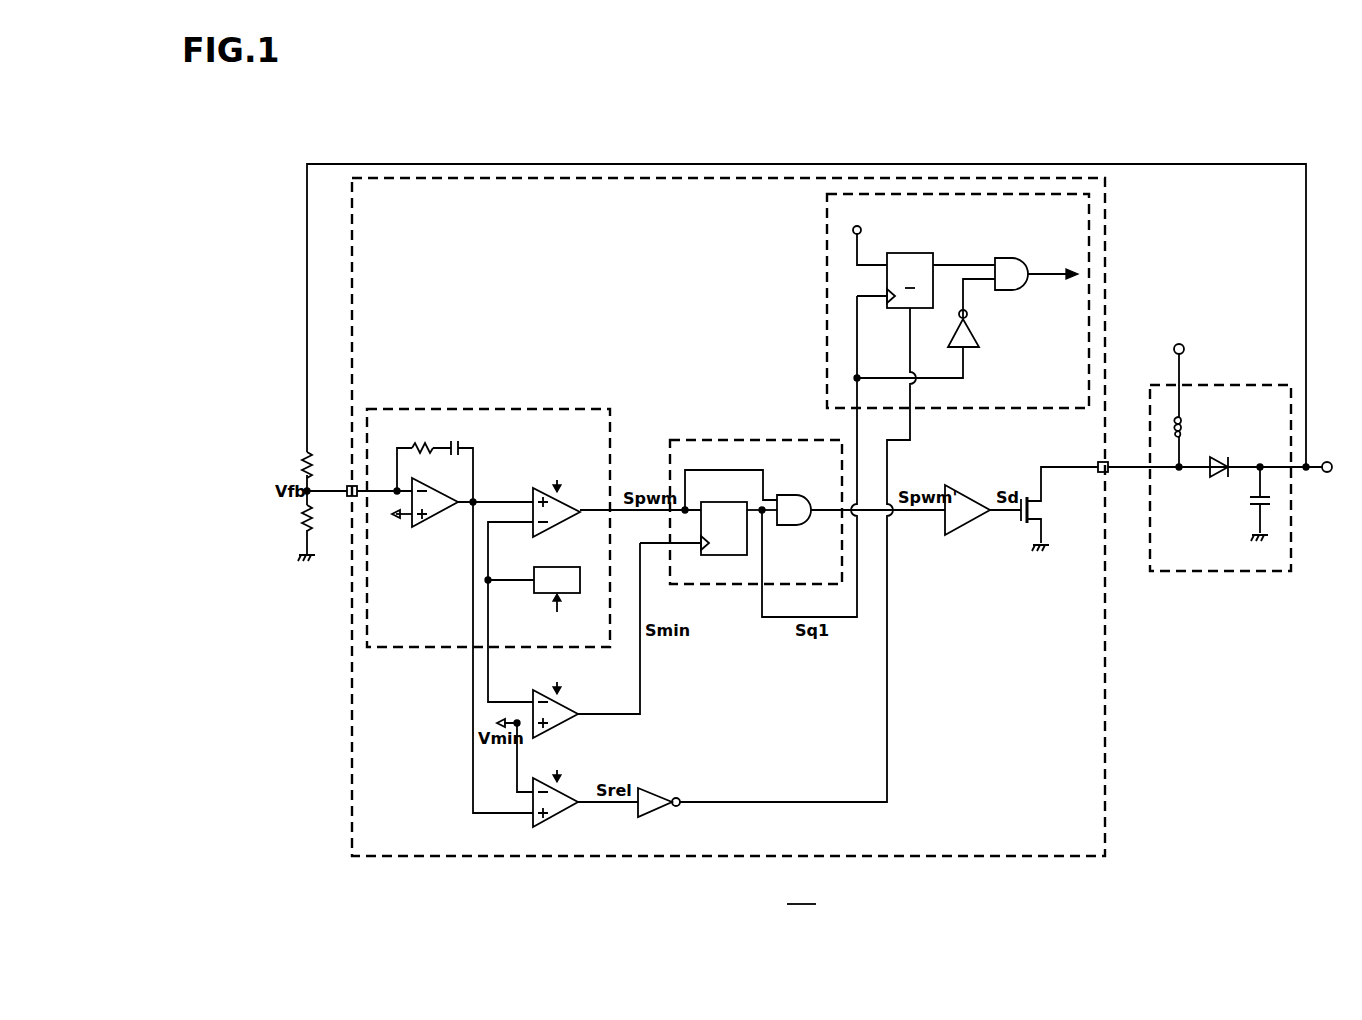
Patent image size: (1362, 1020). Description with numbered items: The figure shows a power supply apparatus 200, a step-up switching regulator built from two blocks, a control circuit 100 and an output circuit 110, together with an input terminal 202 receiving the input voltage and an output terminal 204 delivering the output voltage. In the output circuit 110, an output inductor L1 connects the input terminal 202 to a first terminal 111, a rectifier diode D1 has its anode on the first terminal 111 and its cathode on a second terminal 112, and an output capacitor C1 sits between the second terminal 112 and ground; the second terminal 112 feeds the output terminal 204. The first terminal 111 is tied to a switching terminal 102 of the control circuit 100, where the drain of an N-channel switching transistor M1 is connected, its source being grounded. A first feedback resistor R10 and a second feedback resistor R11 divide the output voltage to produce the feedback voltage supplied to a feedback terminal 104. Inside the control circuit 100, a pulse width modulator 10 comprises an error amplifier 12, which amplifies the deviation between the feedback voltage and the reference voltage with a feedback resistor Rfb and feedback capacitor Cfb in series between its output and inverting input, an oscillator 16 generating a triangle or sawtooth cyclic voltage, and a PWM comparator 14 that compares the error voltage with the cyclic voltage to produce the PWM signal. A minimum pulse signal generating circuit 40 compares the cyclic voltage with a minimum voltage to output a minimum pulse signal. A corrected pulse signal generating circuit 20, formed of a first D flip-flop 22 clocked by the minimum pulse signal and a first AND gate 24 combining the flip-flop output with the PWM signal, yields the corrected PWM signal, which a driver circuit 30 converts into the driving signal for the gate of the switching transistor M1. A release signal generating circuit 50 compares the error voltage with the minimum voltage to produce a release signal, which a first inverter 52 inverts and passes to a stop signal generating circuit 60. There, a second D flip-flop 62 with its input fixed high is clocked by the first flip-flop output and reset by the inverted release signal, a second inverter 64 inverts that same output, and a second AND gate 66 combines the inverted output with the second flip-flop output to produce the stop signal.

The pulse width modulator 10 is at (478, 409).
The error amplifier 12 is at (435, 521).
The PWM comparator 14 is at (553, 528).
The oscillator 16 is at (535, 593).
The corrected pulse signal generating circuit 20 is at (751, 440).
The first D flip-flop 22 is at (723, 556).
The first AND gate 24 is at (790, 494).
The driver circuit 30 is at (963, 492).
The minimum pulse signal generating circuit 40 is at (555, 735).
The release signal generating circuit 50 is at (555, 825).
The first inverter 52 is at (656, 789).
The stop signal generating circuit 60 is at (827, 298).
The second D flip-flop 62 is at (904, 253).
The second inverter 64 is at (975, 335).
The second AND gate 66 is at (1009, 258).
The control circuit 100 is at (1105, 712).
The switching terminal 102 is at (1106, 462).
The feedback terminal 104 is at (348, 486).
The switching regulator output circuit 110 is at (1218, 571).
The first terminal 111 is at (1140, 472).
The second terminal 112 is at (1296, 472).
The power supply apparatus 200 is at (804, 894).
The input terminal 202 is at (1184, 351).
The output terminal 204 is at (1328, 461).
The first feedback resistor R10 is at (302, 468).
The second feedback resistor R11 is at (302, 518).
The feedback resistor Rfb is at (425, 439).
The feedback capacitor Cfb is at (458, 437).
The switching transistor M1 is at (1050, 511).
The output inductor L1 is at (1186, 424).
The rectifier diode D1 is at (1222, 456).
The output capacitor C1 is at (1248, 500).